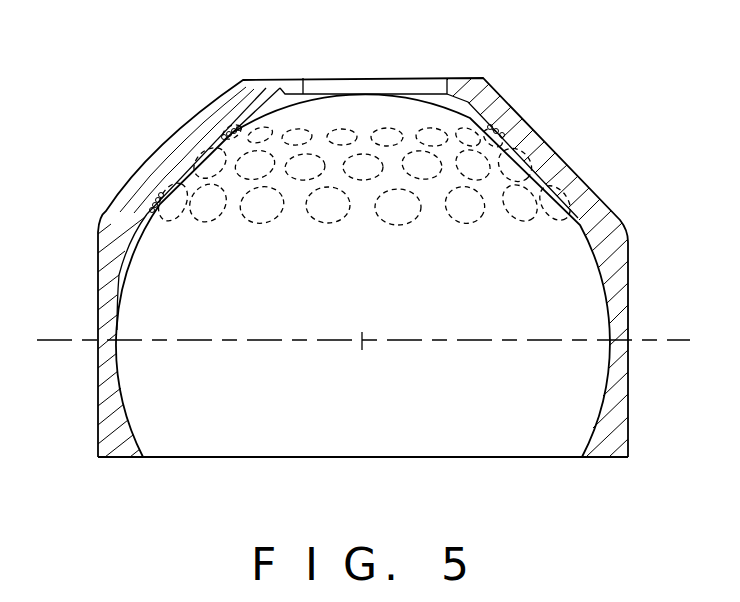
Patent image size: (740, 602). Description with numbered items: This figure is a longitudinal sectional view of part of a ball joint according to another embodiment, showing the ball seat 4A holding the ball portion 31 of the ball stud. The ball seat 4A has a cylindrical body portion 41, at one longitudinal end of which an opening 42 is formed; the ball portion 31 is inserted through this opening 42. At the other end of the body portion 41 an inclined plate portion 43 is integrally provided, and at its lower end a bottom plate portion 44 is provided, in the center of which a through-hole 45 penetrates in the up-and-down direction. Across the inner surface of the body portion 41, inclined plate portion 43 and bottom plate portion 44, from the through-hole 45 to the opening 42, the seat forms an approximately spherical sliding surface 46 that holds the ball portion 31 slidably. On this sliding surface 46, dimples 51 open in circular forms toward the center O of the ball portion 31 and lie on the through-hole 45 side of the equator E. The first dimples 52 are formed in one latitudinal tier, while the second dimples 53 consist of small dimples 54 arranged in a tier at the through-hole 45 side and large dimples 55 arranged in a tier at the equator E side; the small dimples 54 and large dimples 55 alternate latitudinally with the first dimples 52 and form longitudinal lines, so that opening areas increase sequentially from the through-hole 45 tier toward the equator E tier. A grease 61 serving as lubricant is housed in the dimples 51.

The holder (housing) 4A is at (532, 87).
The ball portion 31 is at (128, 270).
The body portion 41 is at (622, 292).
The opening 42 is at (138, 450).
The inclined plate portion 43 is at (553, 150).
The bottom plate portion 44 is at (247, 88).
The through-hole 45 is at (427, 90).
The sliding surface 46 is at (125, 383).
The dimples 51 is at (390, 33).
The first dimples 52 is at (367, 148).
The second dimples 53 is at (346, 120).
The small dimples 54 is at (227, 135).
The large dimples 55 is at (160, 195).
The grease 61 is at (233, 130).
The equator E is at (652, 338).
The center O is at (352, 355).